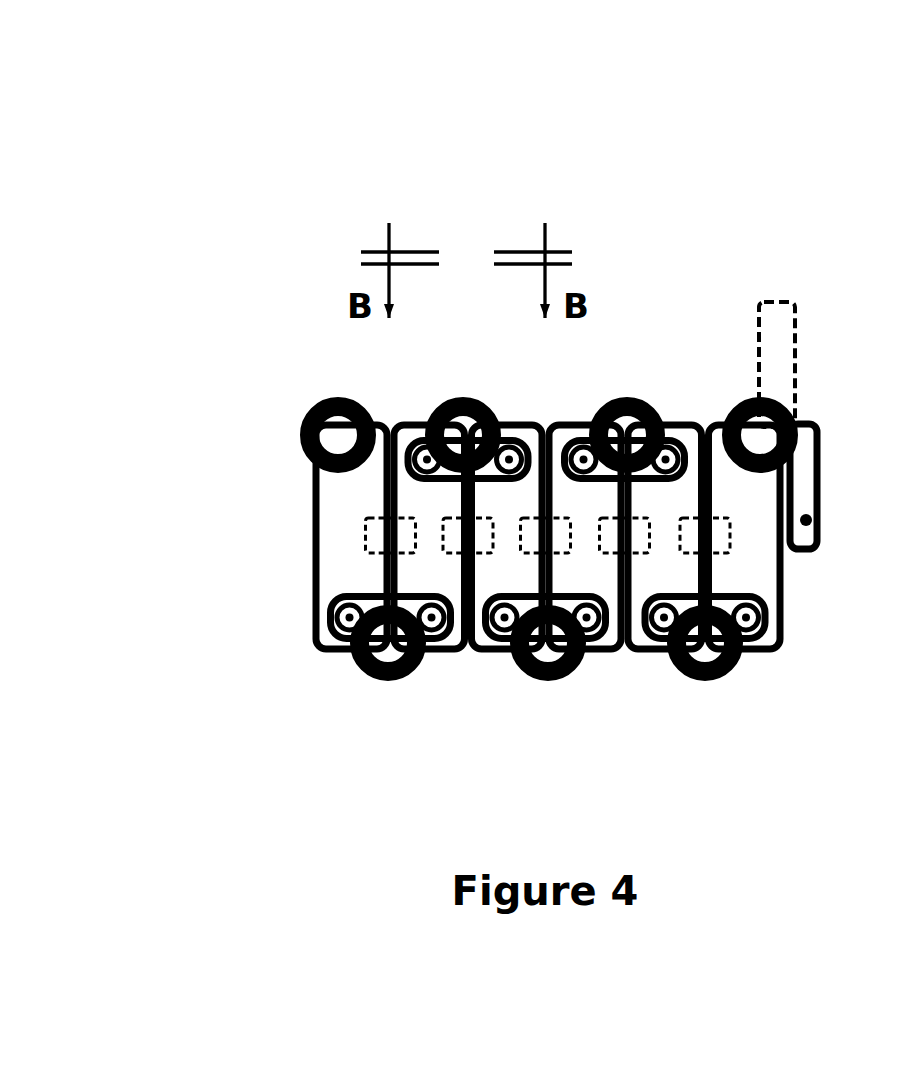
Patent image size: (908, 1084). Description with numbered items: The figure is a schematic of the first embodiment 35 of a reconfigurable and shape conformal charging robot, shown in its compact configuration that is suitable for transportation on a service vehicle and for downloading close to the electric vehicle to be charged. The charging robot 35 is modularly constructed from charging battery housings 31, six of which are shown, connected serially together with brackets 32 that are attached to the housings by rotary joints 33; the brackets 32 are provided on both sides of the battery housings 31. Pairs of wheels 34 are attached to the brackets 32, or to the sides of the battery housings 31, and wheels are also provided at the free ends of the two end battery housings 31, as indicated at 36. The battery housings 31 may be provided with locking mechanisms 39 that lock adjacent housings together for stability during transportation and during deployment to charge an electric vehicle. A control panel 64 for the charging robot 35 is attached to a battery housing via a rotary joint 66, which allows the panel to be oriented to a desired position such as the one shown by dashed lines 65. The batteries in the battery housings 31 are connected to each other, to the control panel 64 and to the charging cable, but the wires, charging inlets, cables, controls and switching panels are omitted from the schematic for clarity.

The charging battery housing 31 is at (310, 553).
The bracket 32 is at (330, 607).
The rotary joint 33 is at (660, 625).
The pair of wheels 34 is at (705, 686).
The charging robot first embodiment 35 is at (262, 228).
The end wheels 36 is at (300, 412).
The locking mechanism 39 is at (360, 536).
The control panel 64 is at (818, 549).
The control panel oriented position 65 is at (777, 330).
The rotary joint 66 is at (803, 416).